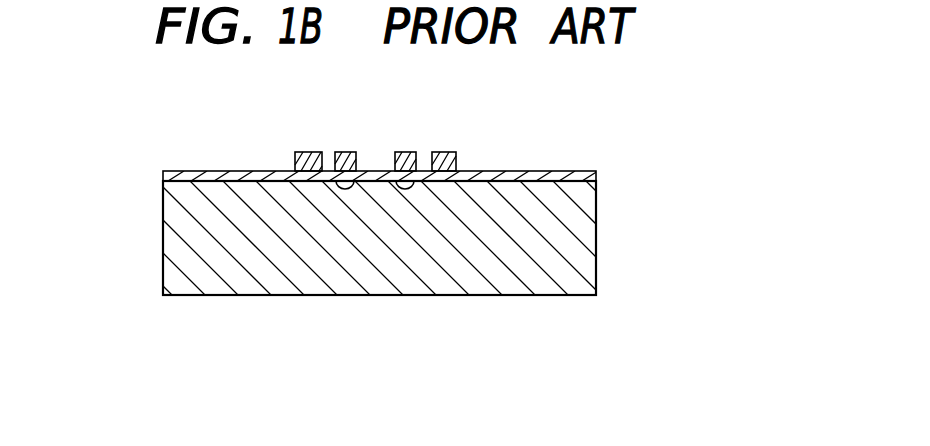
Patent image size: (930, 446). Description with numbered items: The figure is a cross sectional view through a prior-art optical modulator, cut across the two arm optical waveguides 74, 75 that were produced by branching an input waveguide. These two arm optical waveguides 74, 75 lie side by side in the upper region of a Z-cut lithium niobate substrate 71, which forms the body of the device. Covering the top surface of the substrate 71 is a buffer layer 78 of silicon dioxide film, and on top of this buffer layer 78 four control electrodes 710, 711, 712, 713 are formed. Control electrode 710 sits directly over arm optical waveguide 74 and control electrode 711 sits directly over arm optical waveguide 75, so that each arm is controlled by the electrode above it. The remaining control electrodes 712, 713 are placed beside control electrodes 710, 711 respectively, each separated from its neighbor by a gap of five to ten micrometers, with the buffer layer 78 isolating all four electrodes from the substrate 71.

The substrate 71 is at (393, 295).
The arm optical waveguide 74 is at (408, 188).
The arm optical waveguide 75 is at (350, 188).
The buffer layer 78 is at (596, 172).
The control electrode 710 is at (407, 152).
The control electrode 711 is at (338, 152).
The control electrode 712 is at (456, 152).
The control electrode 713 is at (295, 157).